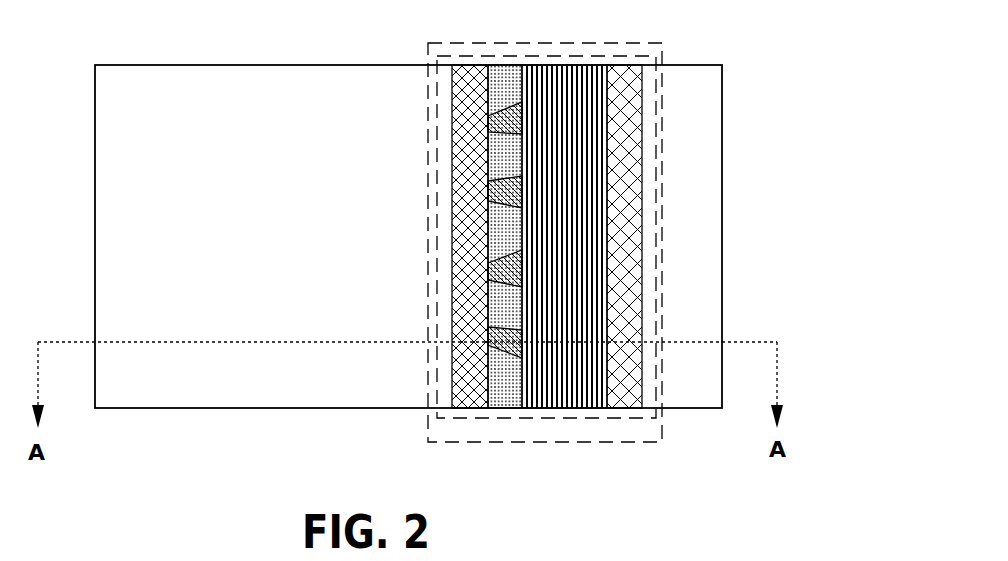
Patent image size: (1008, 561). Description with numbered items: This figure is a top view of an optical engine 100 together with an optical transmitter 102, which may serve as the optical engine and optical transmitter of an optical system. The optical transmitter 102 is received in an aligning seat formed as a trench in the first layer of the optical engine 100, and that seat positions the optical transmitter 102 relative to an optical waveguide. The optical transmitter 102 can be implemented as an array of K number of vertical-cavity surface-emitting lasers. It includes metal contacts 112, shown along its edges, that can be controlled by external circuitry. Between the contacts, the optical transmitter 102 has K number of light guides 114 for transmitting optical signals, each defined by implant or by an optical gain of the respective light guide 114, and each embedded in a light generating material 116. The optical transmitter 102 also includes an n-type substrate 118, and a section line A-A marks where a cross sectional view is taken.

The optical engine 100 is at (135, 64).
The optical transmitter 102 is at (504, 56).
The metal contacts 112 is at (477, 410).
The light guides 114 is at (522, 135).
The light generating material 116 is at (488, 237).
The n-type substrate 118 is at (567, 410).